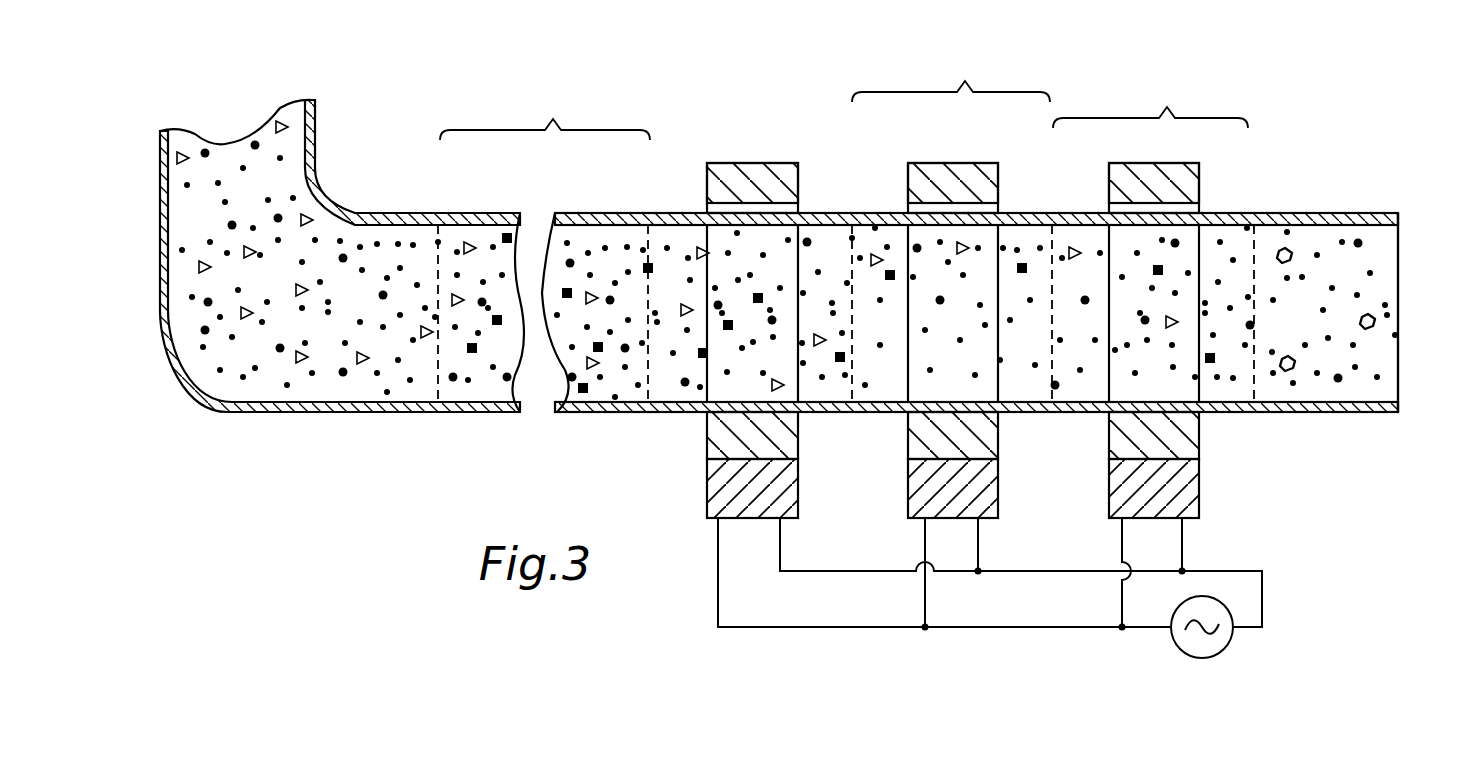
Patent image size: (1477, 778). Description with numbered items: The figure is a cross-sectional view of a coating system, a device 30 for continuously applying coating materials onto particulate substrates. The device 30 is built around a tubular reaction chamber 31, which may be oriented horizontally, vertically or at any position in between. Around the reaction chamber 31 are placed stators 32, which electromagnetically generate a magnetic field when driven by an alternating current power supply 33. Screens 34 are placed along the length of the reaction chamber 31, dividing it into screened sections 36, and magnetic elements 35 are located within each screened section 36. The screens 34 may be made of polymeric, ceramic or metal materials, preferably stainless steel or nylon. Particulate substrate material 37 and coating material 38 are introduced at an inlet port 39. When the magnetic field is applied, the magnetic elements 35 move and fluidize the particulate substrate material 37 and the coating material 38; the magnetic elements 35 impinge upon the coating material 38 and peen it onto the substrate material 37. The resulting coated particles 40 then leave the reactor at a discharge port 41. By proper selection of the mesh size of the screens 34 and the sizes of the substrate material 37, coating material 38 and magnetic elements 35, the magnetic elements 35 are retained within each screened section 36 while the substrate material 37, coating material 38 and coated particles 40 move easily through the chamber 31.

The device 30 is at (398, 463).
The tubular reaction chamber 31 is at (408, 213).
The stators 32 is at (800, 175).
The alternating current power supply 33 is at (1182, 653).
The screens 34 is at (651, 368).
The magnetic elements 35 is at (505, 229).
The screened section 36 is at (844, 95).
The particulate substrate material 37 is at (248, 330).
The coating material 38 is at (398, 243).
The inlet port 39 is at (195, 128).
The coated particles 40 is at (1290, 253).
The discharge port 41 is at (1400, 273).